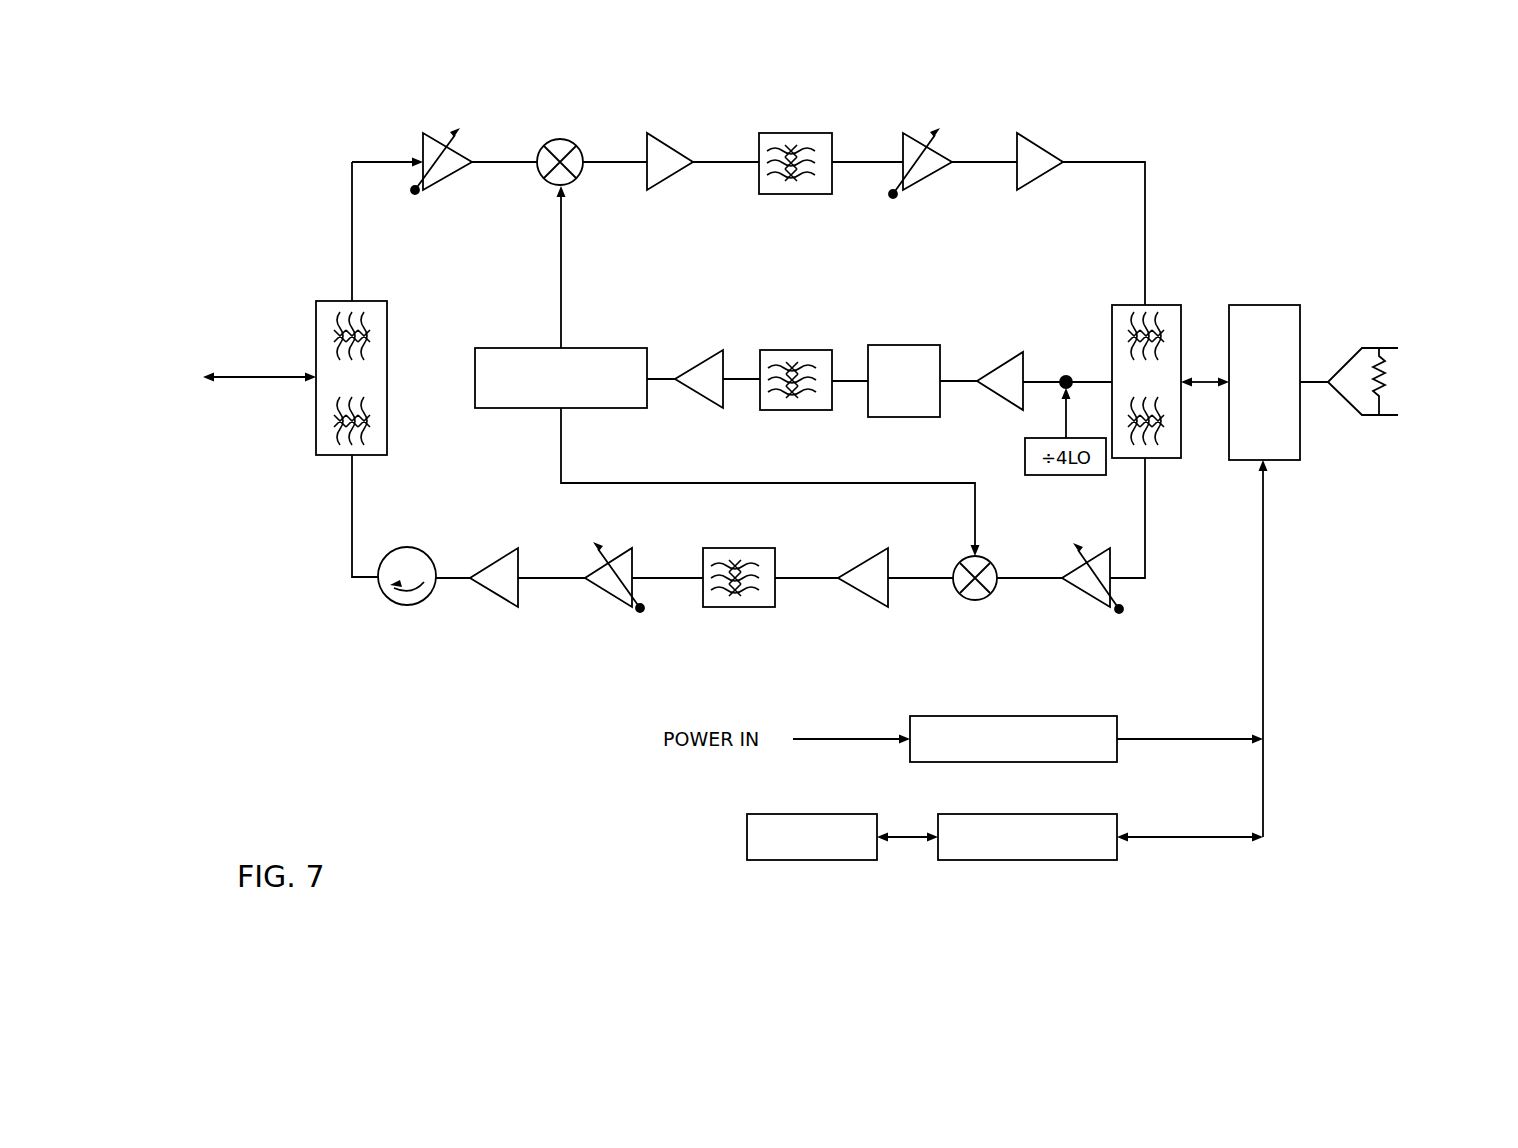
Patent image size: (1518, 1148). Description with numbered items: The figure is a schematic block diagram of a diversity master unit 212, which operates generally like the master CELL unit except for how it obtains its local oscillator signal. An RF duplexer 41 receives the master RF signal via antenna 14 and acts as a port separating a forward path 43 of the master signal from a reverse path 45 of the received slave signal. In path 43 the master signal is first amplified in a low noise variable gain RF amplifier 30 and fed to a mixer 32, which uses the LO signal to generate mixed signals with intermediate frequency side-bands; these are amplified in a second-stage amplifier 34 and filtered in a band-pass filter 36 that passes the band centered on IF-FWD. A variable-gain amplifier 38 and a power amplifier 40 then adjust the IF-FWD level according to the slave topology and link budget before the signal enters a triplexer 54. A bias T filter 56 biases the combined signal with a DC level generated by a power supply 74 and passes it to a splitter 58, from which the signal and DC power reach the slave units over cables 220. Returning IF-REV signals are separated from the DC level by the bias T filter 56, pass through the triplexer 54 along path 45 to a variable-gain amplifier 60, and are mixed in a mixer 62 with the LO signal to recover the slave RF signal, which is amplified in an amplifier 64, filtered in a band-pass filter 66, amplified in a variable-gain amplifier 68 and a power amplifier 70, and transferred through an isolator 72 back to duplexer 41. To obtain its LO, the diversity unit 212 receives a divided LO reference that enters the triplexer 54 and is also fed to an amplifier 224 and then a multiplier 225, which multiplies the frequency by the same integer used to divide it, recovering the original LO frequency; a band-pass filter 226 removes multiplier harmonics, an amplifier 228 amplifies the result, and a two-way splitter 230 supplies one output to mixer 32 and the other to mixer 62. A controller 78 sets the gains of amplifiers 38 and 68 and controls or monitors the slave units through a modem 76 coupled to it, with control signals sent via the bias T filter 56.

The diversity master unit 212 is at (1195, 136).
The antenna 14 is at (256, 342).
The RF duplexer 41 is at (368, 301).
The low noise variable gain RF amplifier 30 is at (430, 132).
The mixer 32 is at (565, 139).
The path 43 is at (523, 195).
The second-stage amplifier 34 is at (668, 140).
The band-pass filter 36 is at (785, 194).
The variable-gain amplifier 38 is at (922, 185).
The power amplifier 40 is at (1038, 148).
The triplexer 54 is at (1159, 305).
The bias T filter 56 is at (1256, 305).
The splitter 58 is at (1367, 420).
The cables 220 is at (1426, 389).
The two-way splitter 230 is at (519, 348).
The amplifier 228 is at (717, 352).
The band-pass filter 226 is at (815, 350).
The multiplier 225 is at (919, 345).
The amplifier 224 is at (1012, 353).
The path 45 is at (503, 537).
The isolator 72 is at (405, 606).
The power amplifier 70 is at (505, 599).
The variable-gain amplifier 68 is at (616, 599).
The band-pass filter 66 is at (733, 548).
The amplifier 64 is at (870, 599).
The mixer 62 is at (972, 600).
The variable-gain amplifier 60 is at (1095, 599).
The power supply 74 is at (1014, 716).
The modem 76 is at (826, 814).
The controller 78 is at (1068, 814).